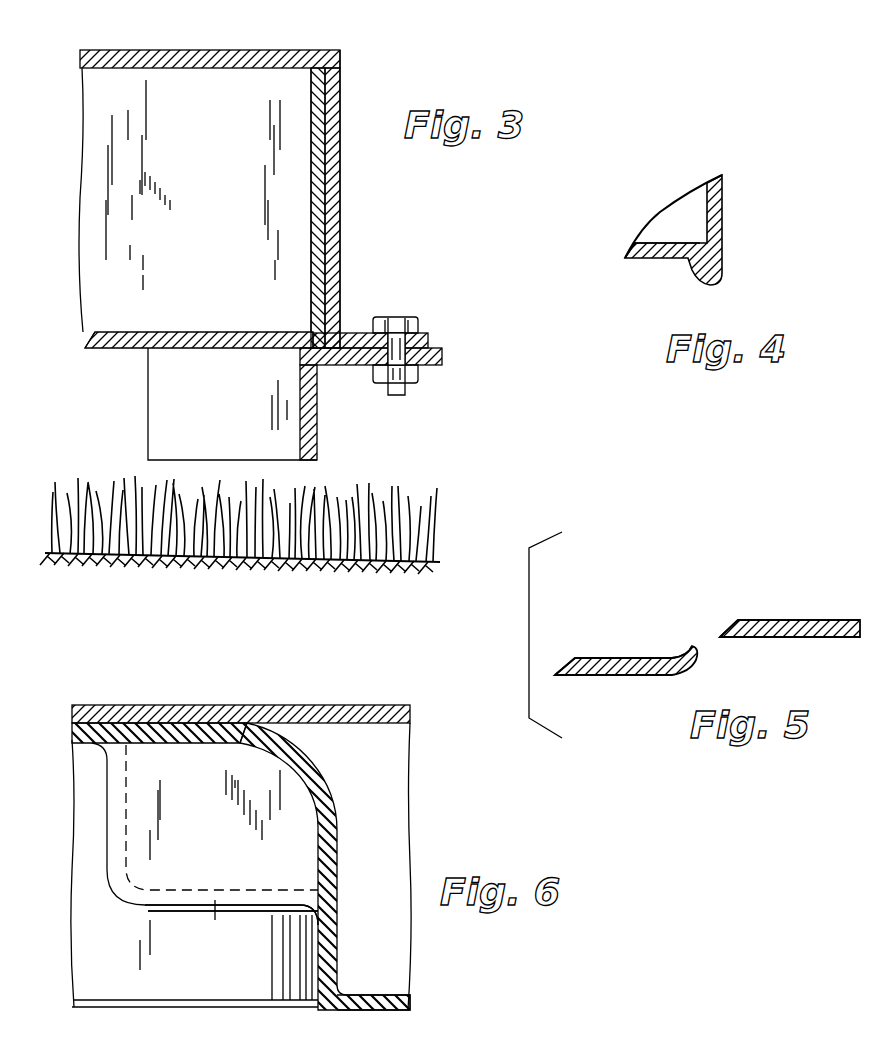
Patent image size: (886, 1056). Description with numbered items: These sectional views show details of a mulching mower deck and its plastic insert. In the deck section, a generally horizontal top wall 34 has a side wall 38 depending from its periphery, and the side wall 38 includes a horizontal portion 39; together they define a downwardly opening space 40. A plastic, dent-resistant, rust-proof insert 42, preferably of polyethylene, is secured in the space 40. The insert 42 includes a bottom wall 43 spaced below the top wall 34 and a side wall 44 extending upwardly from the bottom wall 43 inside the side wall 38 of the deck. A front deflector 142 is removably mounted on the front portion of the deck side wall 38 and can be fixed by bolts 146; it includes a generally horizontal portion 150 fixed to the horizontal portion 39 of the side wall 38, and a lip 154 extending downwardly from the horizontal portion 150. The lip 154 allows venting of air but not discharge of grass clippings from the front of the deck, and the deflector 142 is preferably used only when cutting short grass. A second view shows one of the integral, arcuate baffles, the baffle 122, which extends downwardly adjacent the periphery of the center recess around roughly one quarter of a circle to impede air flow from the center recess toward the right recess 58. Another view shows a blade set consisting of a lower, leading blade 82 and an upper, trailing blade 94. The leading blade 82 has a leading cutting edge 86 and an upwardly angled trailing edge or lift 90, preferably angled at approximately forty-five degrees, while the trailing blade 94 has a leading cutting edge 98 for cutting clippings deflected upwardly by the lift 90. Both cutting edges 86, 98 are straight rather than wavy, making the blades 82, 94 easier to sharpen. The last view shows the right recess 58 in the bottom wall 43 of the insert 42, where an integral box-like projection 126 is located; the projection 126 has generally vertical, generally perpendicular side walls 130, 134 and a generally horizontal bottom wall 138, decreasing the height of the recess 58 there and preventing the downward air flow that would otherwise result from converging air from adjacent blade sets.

In FIG. 3, the top wall 34 is at (228, 52).
In FIG. 6, the top wall 34 is at (396, 718).
In FIG. 3, the side wall 38 is at (333, 193).
In FIG. 3, the horizontal portion 39 is at (357, 333).
In FIG. 3, the downwardly opening space 40 is at (179, 200).
In FIG. 3, the insert 42 is at (120, 340).
In FIG. 4, the insert 42 is at (727, 197).
In FIG. 6, the insert 42 is at (324, 781).
In FIG. 3, the bottom wall 43 is at (187, 334).
In FIG. 6, the bottom wall 43 is at (357, 995).
In FIG. 3, the side wall 44 is at (318, 233).
In FIG. 6, the right recess 58 is at (75, 740).
In FIG. 5, the leading blade 82 is at (622, 658).
In FIG. 5, the leading cutting edge 86 is at (555, 675).
In FIG. 5, the lift 90 is at (690, 655).
In FIG. 5, the trailing blade 94 is at (822, 621).
In FIG. 5, the leading cutting edge 98 is at (722, 633).
In FIG. 4, the baffle 122 is at (705, 275).
In FIG. 6, the projection 126 is at (236, 853).
In FIG. 6, the side wall 130 is at (105, 818).
In FIG. 6, the side wall 134 is at (247, 750).
In FIG. 6, the bottom wall 138 is at (205, 908).
In FIG. 3, the front deflector 142 is at (317, 380).
In FIG. 3, the bolt 146 is at (400, 317).
In FIG. 3, the horizontal portion 150 is at (430, 352).
In FIG. 3, the lip 154 is at (300, 402).